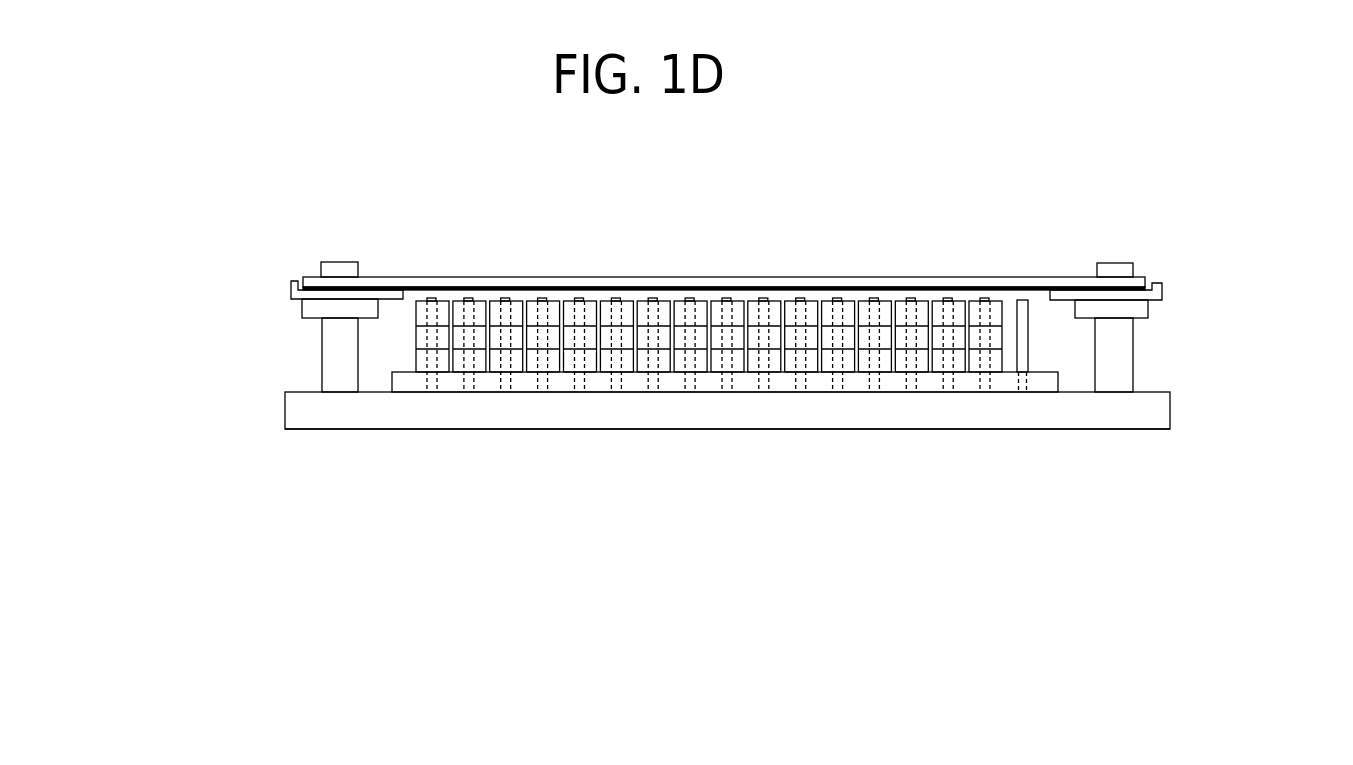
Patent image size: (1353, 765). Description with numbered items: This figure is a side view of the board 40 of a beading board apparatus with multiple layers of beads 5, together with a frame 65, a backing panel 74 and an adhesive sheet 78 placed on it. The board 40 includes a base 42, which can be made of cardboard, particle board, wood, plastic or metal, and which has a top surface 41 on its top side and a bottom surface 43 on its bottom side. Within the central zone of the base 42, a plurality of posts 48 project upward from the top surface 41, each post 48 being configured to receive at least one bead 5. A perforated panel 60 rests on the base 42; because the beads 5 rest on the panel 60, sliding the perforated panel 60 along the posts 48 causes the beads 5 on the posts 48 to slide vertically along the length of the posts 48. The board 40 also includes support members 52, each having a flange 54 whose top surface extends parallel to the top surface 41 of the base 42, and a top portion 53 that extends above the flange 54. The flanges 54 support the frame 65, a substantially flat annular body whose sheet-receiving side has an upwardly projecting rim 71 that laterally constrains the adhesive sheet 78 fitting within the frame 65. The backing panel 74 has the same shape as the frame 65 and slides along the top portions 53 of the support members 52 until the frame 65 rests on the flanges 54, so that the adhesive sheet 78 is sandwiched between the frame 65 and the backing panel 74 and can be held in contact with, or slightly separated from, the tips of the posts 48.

The board 40 is at (1117, 437).
The base 42 is at (1167, 413).
The bottom surface 43 is at (390, 430).
The top surface 41 is at (375, 392).
The support member 52 is at (1125, 352).
The top portion 53 is at (1115, 263).
The upwardly projecting rim 71 is at (297, 281).
The flange 54 is at (1148, 310).
The frame 65 is at (292, 300).
The backing panel 74 is at (673, 277).
The adhesive sheet 78 is at (605, 290).
The post 48 is at (507, 299).
The bead 5 is at (555, 299).
The perforated panel 60 is at (1042, 392).